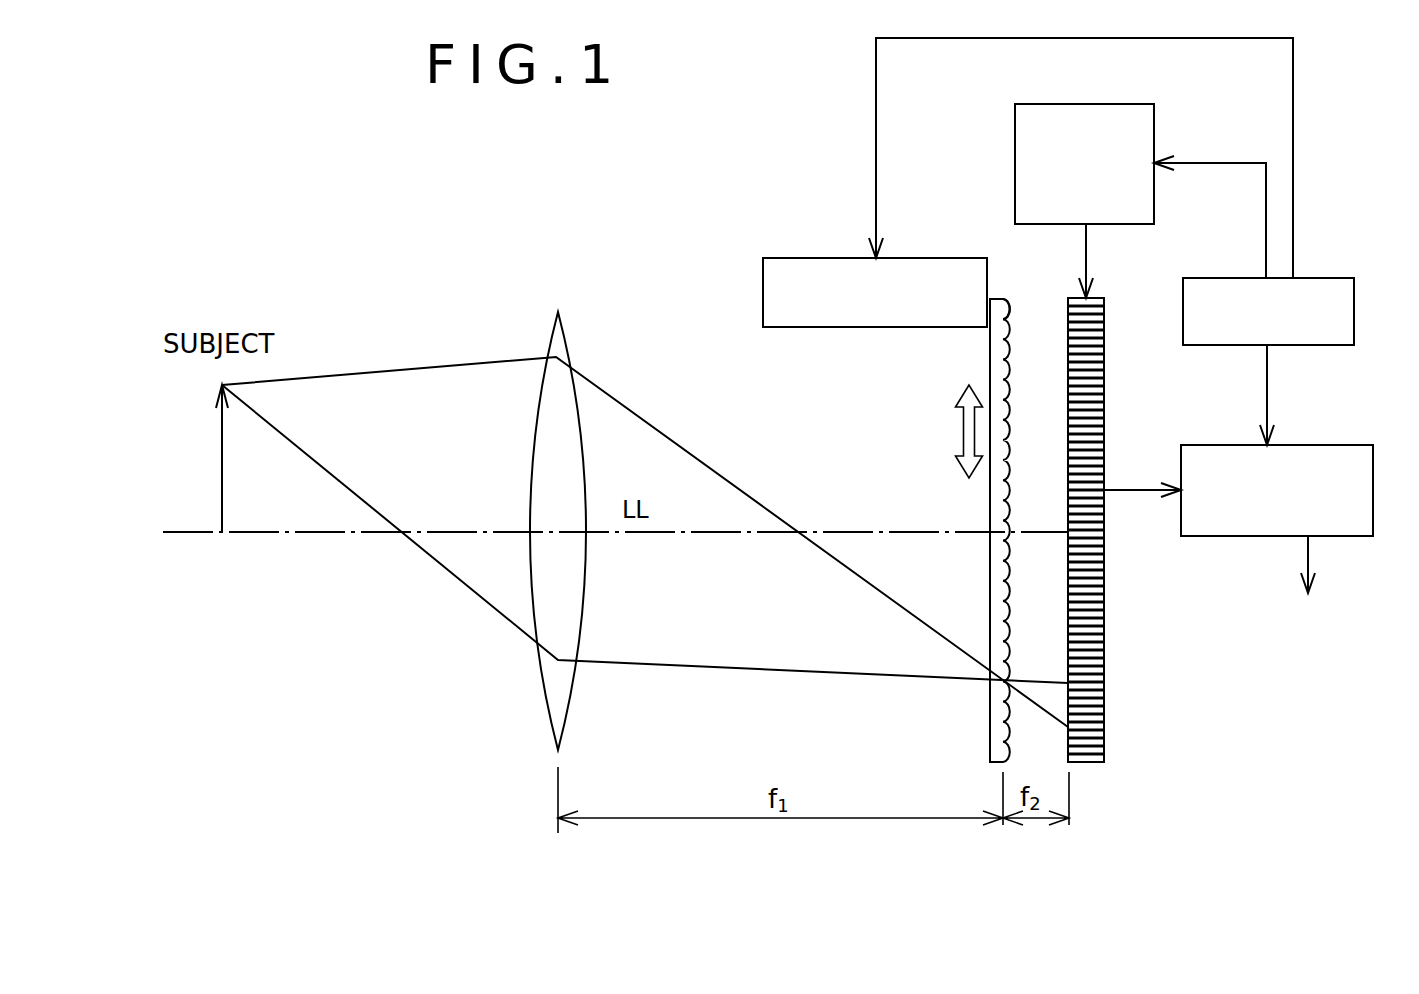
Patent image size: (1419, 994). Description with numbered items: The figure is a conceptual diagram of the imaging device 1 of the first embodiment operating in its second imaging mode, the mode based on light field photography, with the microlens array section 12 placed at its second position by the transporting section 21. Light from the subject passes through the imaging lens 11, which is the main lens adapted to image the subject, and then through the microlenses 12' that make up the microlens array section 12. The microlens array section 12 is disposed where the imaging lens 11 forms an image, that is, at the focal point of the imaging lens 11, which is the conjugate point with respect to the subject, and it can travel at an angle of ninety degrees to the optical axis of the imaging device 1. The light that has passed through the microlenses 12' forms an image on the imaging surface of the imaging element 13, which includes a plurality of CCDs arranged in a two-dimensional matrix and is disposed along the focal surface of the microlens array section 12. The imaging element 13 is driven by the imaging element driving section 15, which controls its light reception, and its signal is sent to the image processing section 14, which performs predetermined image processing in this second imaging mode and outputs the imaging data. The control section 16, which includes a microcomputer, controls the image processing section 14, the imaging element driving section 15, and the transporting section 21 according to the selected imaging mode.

The imaging device 1 is at (409, 264).
The imaging lens 11 is at (574, 697).
The microlens array section 12 is at (941, 530).
The microlenses 12' is at (1025, 290).
The imaging element 13 is at (1105, 680).
The image processing section 14 is at (1334, 445).
The imaging element driving section 15 is at (1128, 104).
The control section 16 is at (1336, 278).
The transporting section 21 is at (800, 258).